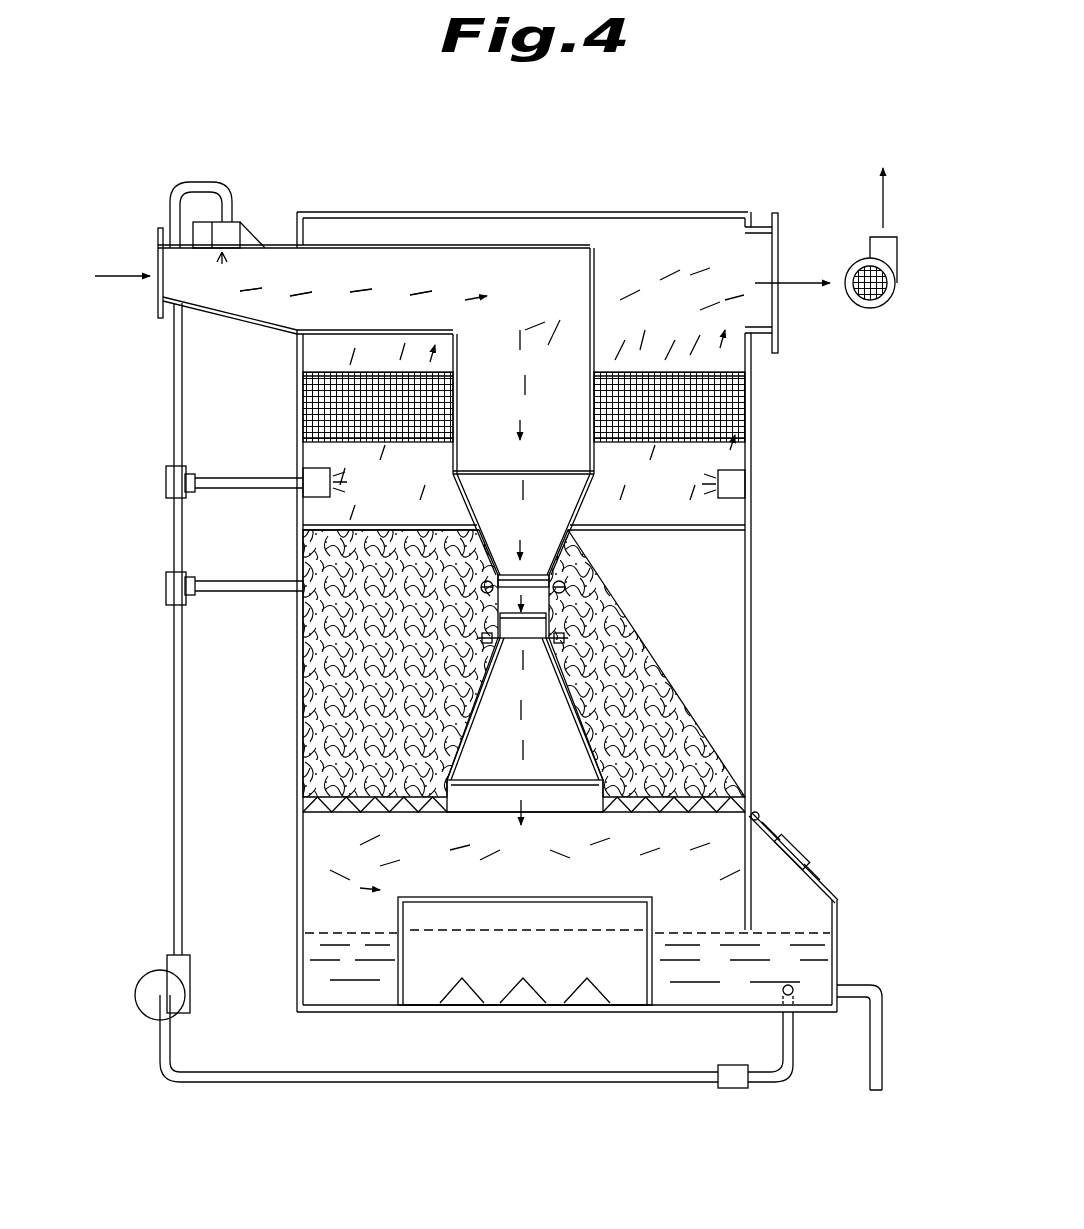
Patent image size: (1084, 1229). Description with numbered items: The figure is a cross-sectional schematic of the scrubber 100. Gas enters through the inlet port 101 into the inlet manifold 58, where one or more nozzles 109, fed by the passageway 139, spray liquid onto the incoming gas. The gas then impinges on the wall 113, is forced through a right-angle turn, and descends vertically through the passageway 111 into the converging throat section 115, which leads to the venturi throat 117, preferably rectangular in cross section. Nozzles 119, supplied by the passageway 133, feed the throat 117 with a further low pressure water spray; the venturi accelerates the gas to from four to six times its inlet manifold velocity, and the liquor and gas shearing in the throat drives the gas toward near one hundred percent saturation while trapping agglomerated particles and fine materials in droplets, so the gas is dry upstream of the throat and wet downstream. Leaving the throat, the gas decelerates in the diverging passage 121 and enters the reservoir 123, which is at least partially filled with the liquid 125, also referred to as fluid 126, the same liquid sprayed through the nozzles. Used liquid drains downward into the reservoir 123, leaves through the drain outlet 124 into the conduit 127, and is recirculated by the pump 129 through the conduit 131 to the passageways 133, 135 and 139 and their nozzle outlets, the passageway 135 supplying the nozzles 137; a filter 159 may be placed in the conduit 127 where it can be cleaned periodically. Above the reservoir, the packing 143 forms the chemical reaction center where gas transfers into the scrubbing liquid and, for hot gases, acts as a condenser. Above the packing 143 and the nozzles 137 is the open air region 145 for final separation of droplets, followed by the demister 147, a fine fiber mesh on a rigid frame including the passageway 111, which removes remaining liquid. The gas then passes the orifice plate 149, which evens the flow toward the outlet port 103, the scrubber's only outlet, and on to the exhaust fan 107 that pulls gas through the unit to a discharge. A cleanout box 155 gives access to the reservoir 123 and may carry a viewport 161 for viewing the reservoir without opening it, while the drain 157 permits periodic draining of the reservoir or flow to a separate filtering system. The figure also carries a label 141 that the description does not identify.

The scrubber 100 is at (693, 95).
The inlet port 101 is at (170, 265).
The outlet port 103 is at (778, 243).
The exhaust fan 107 is at (885, 283).
The nozzles 109 is at (223, 237).
The passageway 111 is at (590, 328).
The wall 113 is at (592, 268).
The converging throat section 115 is at (470, 465).
The venturi throat 117 is at (487, 638).
The nozzles 119 is at (483, 590).
The diverging passage 121 is at (458, 755).
The reservoir 123 is at (303, 897).
The drain outlet 124 is at (794, 988).
The liquid 125 is at (360, 966).
The fluid 126 is at (505, 962).
The conduit 127 is at (500, 1082).
The pump 129 is at (147, 1015).
The conduit 131 is at (173, 848).
The passageway 133 is at (270, 596).
The passageway 135 is at (263, 490).
The nozzles 137 is at (315, 480).
The passageway 139 is at (307, 257).
The support grate 141 is at (318, 813).
The packing 143 is at (305, 742).
The open air region 145 is at (719, 510).
The demister 147 is at (750, 412).
The orifice plate 149 is at (613, 370).
The cleanout box 155 is at (781, 820).
The drain 157 is at (887, 1038).
The filter 159 is at (725, 1090).
The viewport 161 is at (800, 850).
The inlet manifold 58 is at (242, 323).